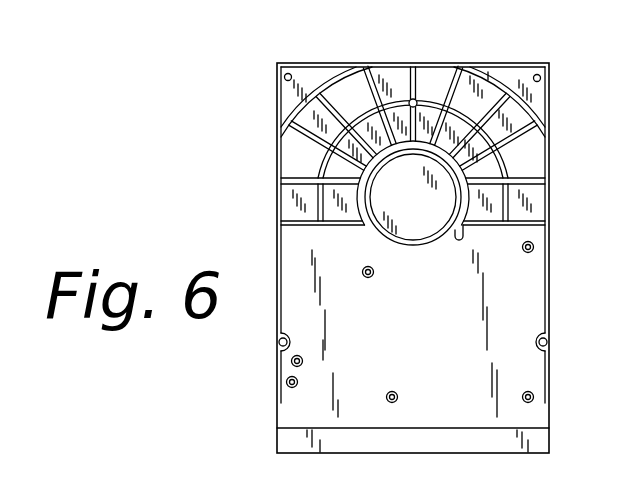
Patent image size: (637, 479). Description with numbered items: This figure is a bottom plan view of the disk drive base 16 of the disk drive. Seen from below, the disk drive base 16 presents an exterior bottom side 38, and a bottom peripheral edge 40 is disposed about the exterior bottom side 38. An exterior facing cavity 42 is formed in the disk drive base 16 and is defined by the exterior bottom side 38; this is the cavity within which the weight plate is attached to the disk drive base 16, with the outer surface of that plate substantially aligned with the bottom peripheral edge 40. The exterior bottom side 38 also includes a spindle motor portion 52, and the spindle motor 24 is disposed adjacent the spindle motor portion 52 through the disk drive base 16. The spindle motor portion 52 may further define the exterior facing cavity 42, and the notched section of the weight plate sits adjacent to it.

The disk drive base 16 is at (428, 332).
The spindle motor 24 is at (423, 207).
The exterior bottom side 38 is at (382, 80).
The bottom peripheral edge 40 is at (424, 64).
The exterior facing cavity 42 is at (475, 88).
The spindle motor portion 52 is at (474, 179).